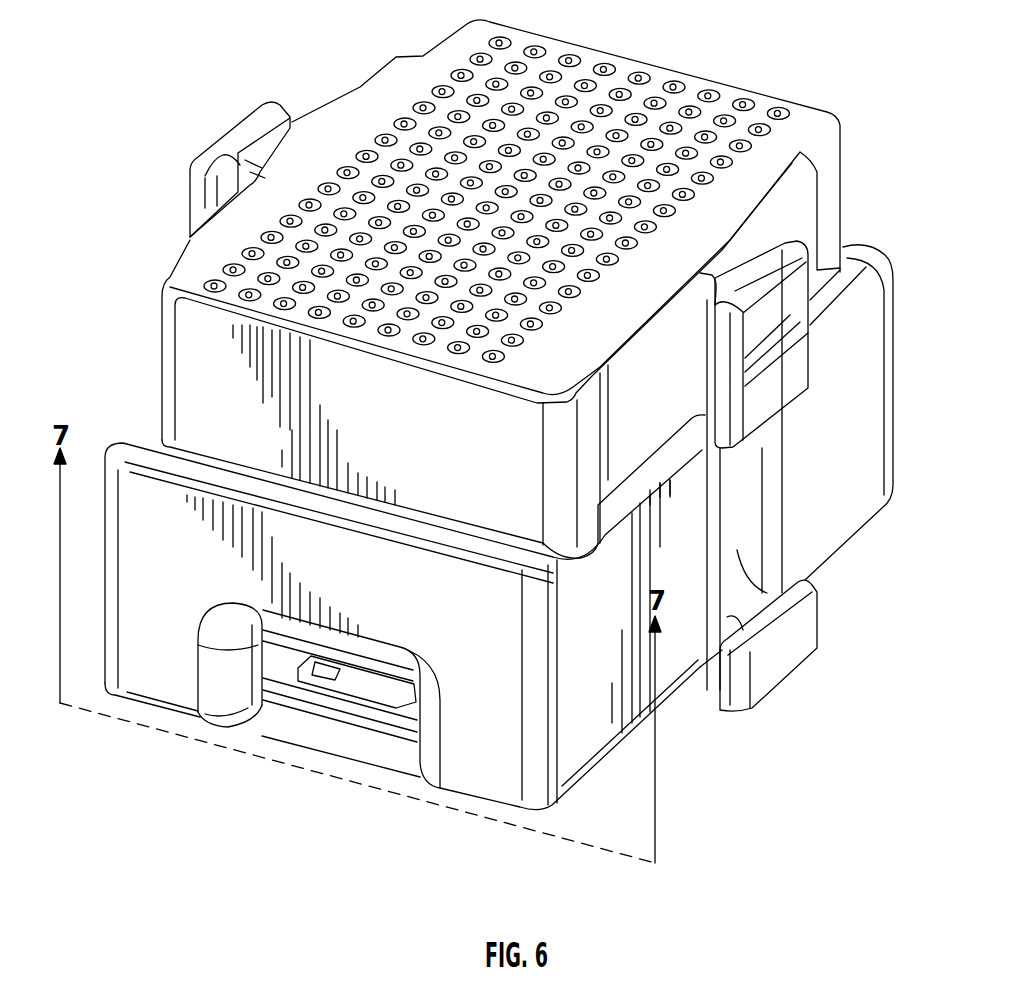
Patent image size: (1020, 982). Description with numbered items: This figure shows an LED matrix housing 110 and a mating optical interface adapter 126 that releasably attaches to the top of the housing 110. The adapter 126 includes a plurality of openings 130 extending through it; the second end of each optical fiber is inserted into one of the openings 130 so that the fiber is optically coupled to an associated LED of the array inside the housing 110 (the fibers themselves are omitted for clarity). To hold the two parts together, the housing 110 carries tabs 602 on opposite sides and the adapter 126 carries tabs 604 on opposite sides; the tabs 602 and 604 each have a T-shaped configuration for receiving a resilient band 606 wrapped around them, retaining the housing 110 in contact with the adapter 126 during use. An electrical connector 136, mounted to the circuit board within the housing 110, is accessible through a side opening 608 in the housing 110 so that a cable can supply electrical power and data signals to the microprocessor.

The LED matrix housing 110 is at (833, 558).
The optical interface adapter 126 is at (162, 348).
The openings 130 is at (210, 286).
The electrical connector 136 is at (318, 690).
The tabs 602 is at (790, 670).
The tabs 604 is at (192, 162).
The resilient band 606 is at (292, 128).
The side opening 608 is at (376, 752).